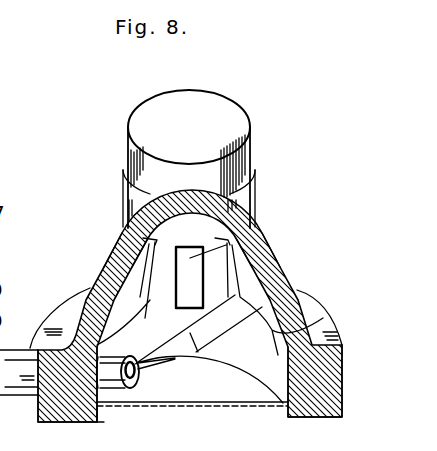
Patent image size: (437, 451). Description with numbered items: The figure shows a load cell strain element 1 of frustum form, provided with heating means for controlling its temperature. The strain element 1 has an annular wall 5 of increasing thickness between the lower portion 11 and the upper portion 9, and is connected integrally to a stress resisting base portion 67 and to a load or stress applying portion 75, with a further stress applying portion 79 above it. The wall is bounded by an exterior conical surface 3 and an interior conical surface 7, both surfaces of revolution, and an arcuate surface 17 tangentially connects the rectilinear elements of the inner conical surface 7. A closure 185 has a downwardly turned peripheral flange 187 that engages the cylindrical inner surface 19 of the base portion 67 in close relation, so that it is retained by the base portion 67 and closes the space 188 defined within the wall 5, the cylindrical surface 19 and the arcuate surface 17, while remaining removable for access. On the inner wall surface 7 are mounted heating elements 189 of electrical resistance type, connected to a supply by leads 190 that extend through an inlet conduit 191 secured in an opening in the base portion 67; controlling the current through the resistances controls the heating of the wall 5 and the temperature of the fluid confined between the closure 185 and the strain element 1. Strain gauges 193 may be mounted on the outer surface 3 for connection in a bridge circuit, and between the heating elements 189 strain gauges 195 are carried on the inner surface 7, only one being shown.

The strain element 1 is at (262, 233).
The exterior conical surface 3 is at (287, 313).
The annular wall 5 is at (110, 253).
The interior conical surface 7 is at (252, 330).
The upper portion 9 is at (126, 226).
The lower portion 11 is at (67, 310).
The arcuate surface 17 is at (185, 216).
The inner surface 19 is at (266, 382).
The base portion 67 is at (62, 413).
The stress applying portion 75 is at (256, 196).
The stress applying portion 79 is at (251, 148).
The closure 185 is at (196, 396).
The peripheral flange 187 is at (103, 410).
The space 188 is at (330, 313).
The heating elements 189 is at (115, 246).
The leads 190 is at (195, 336).
The inlet conduit 191 is at (15, 400).
The strain gauges 193 is at (113, 270).
The strain gauges 195 is at (255, 222).